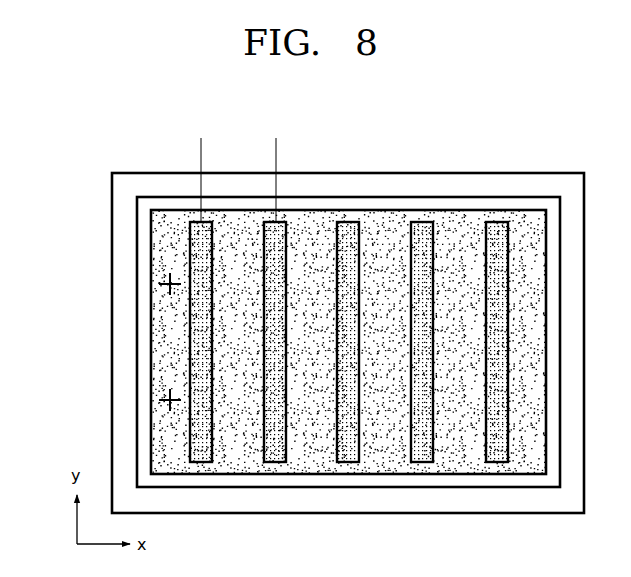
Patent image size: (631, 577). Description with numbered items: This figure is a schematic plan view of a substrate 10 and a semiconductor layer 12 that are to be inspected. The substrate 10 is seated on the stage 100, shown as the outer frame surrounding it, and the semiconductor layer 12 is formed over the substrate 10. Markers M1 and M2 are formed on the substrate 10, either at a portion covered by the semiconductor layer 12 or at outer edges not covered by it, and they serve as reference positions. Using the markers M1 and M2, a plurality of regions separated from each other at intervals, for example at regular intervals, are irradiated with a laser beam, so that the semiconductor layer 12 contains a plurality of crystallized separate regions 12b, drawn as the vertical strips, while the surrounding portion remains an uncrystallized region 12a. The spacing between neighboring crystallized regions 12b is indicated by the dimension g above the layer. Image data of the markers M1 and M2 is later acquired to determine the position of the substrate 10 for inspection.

The stage 100 is at (118, 208).
The substrate 10 is at (142, 243).
The semiconductor layer 12 is at (276, 342).
The uncrystallized region 12a is at (167, 315).
The crystallized separate regions 12b is at (200, 363).
The marker M1 is at (161, 277).
The marker M2 is at (161, 410).
The gap between electrode lines g is at (274, 144).